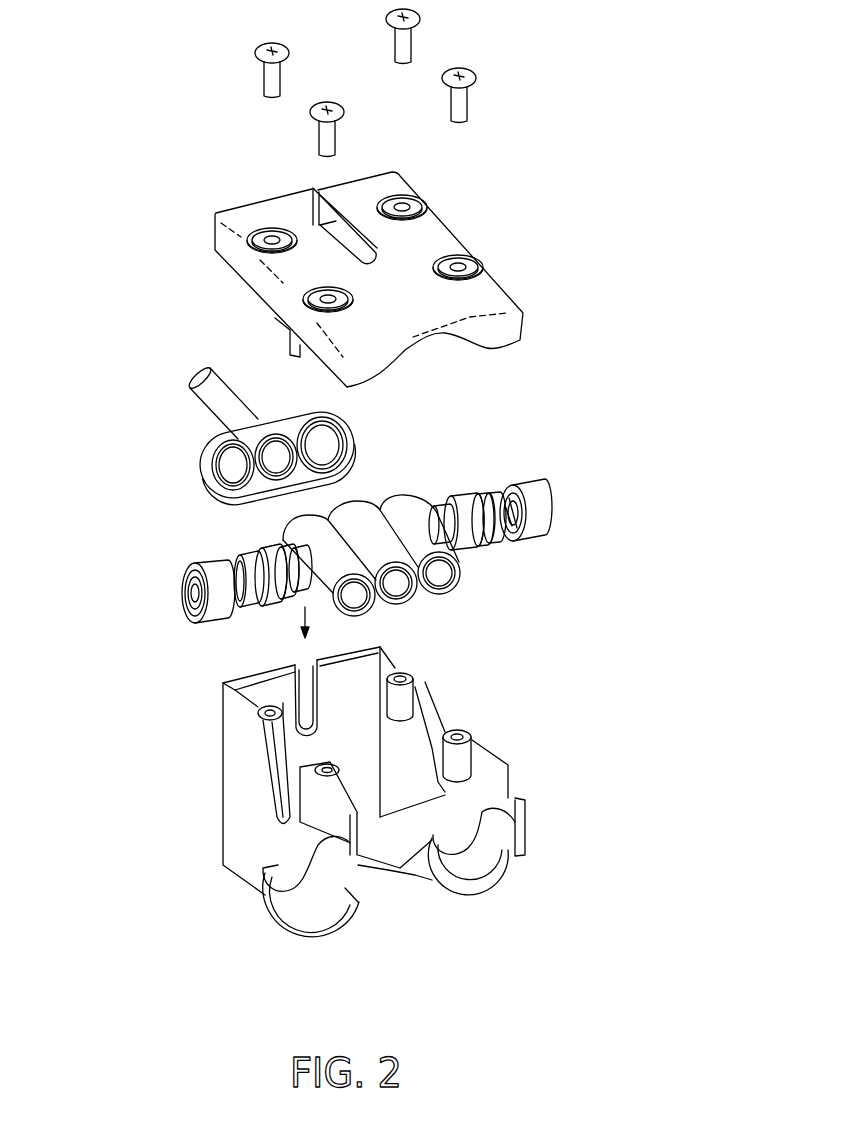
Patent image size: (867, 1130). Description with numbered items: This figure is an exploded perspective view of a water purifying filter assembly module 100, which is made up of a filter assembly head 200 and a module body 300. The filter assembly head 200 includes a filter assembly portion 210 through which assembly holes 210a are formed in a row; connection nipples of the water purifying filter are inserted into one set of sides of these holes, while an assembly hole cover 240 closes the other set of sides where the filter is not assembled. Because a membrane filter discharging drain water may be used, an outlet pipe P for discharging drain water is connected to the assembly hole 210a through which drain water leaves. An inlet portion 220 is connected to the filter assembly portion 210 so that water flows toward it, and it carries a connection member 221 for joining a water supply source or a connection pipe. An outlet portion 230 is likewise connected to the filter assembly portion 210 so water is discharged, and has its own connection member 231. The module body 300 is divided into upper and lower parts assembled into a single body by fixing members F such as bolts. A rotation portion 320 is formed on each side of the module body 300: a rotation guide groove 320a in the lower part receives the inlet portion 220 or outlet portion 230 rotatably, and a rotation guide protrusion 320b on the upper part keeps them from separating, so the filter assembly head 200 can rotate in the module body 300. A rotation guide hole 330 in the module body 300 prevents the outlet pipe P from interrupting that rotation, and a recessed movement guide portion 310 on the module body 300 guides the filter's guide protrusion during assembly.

The water purifying filter assembly module 100 is at (113, 67).
The fixing members F is at (466, 101).
The module body 300 is at (520, 758).
The rotation portion 320 is at (74, 766).
The rotation guide protrusion 320b is at (272, 313).
The rotation guide groove 320a is at (278, 813).
The movement guide portion 310 is at (523, 855).
The rotation guide hole 330 is at (310, 190).
The filter assembly head 200 is at (524, 417).
The filter assembly portion 210 is at (398, 498).
The assembly holes 210a is at (441, 583).
The inlet portion 220 is at (236, 543).
The connection member 221 is at (208, 564).
The outlet portion 230 is at (513, 560).
The connection member 231 is at (535, 500).
The assembly hole cover 240 is at (194, 440).
The outlet pipe P is at (233, 393).